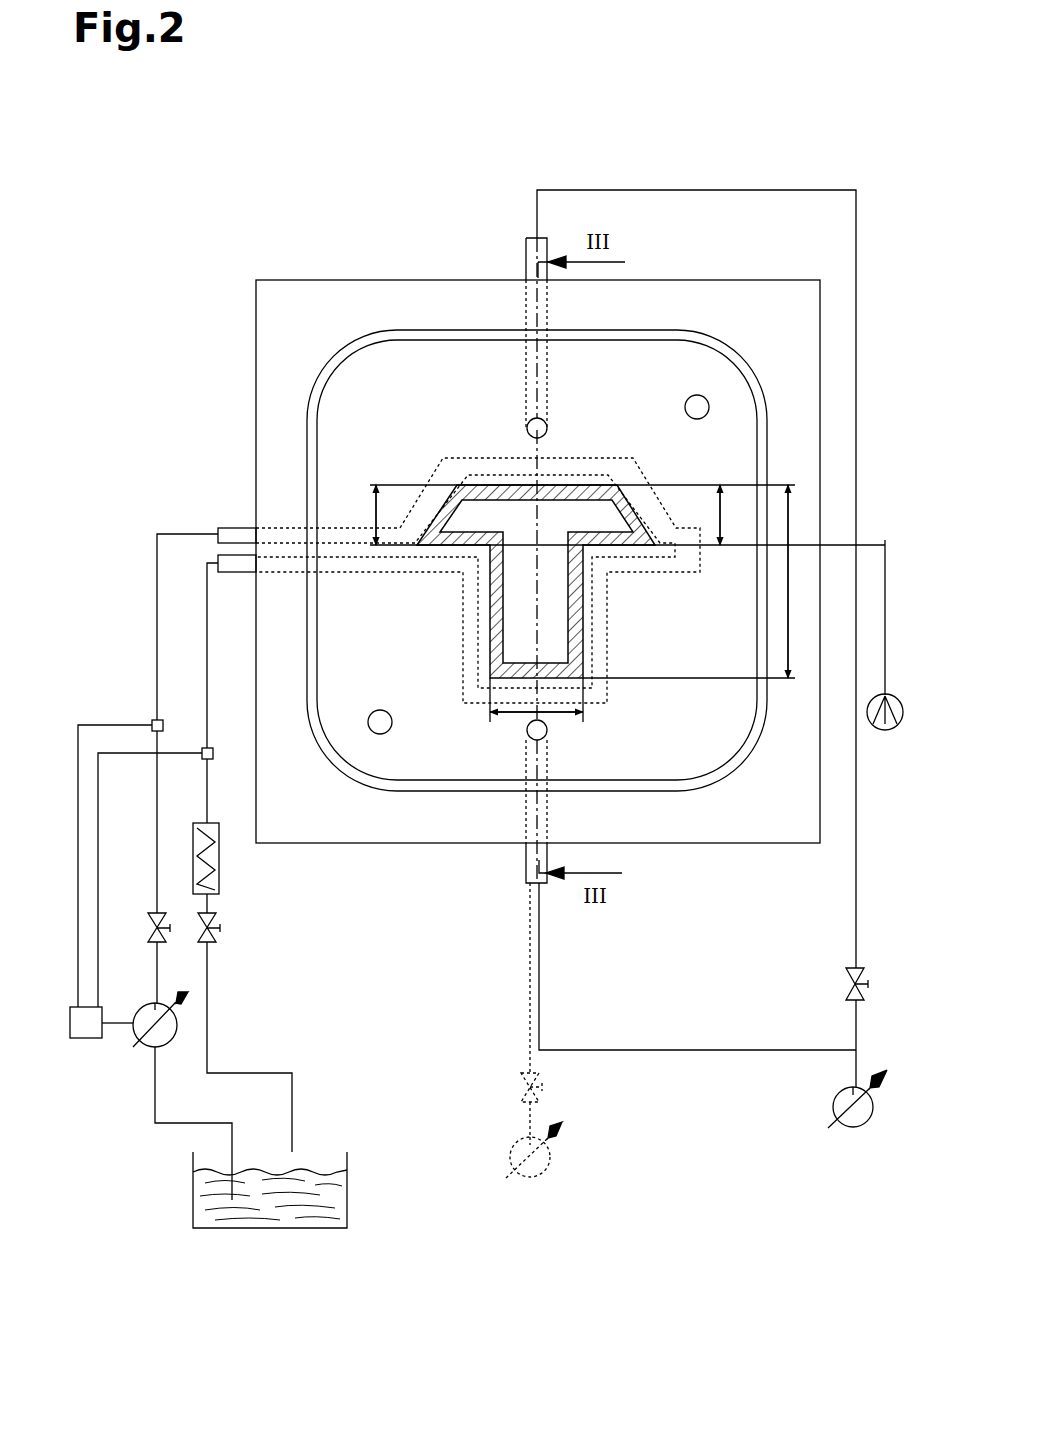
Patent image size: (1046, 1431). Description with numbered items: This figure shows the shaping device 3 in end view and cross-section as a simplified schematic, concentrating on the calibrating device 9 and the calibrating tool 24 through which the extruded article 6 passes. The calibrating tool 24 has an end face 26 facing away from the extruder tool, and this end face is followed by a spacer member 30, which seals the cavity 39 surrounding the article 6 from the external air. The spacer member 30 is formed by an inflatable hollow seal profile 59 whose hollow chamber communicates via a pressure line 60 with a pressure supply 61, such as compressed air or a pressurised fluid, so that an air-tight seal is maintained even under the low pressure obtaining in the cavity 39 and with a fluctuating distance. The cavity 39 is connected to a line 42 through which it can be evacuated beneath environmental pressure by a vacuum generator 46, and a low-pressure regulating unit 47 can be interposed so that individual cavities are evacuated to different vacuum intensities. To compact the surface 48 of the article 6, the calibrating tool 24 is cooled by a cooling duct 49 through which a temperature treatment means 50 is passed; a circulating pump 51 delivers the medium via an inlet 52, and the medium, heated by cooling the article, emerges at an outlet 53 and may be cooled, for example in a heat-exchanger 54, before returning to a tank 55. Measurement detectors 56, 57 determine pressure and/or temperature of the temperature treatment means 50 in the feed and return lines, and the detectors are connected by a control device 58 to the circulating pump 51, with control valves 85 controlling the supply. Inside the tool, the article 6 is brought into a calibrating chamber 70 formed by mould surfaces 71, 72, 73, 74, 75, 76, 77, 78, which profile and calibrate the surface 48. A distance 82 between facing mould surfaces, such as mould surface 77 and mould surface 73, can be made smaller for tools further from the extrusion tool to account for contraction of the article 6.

The shaping device 3 is at (655, 123).
The article 6 is at (437, 478).
The calibrating device 9 is at (768, 128).
The calibrating tool 24 is at (347, 305).
The end face 26 is at (635, 320).
The spacer member 30 is at (720, 303).
The cavity 39 is at (713, 430).
The line 42 is at (527, 240).
The vacuum generator 46 is at (838, 1105).
The low-pressure regulating unit 47 is at (850, 975).
The surface 48 is at (445, 487).
The cooling duct 49 is at (655, 500).
The temperature treatment means 50 is at (308, 1190).
The circulating pump 51 is at (168, 1030).
The inlet 52 is at (233, 563).
The outlet 53 is at (233, 532).
The heat-exchanger 54 is at (218, 868).
The tank 55 is at (347, 1182).
The measurement detector 56 is at (152, 722).
The measurement detector 57 is at (205, 748).
The control device 58 is at (85, 1040).
The hollow seal profile 59 is at (432, 333).
The pressure line 60 is at (867, 540).
The pressure supply 61 is at (883, 733).
The calibrating chamber 70 is at (553, 508).
The mould surface 71 is at (600, 535).
The mould surface 72 is at (567, 657).
The mould surface 73 is at (575, 715).
The mould surface 74 is at (493, 650).
The mould surface 75 is at (426, 533).
The mould surface 76 is at (420, 492).
The mould surface 77 is at (470, 485).
The mould surface 78 is at (612, 492).
The distance 82 is at (370, 512).
The control valve 85 is at (216, 918).